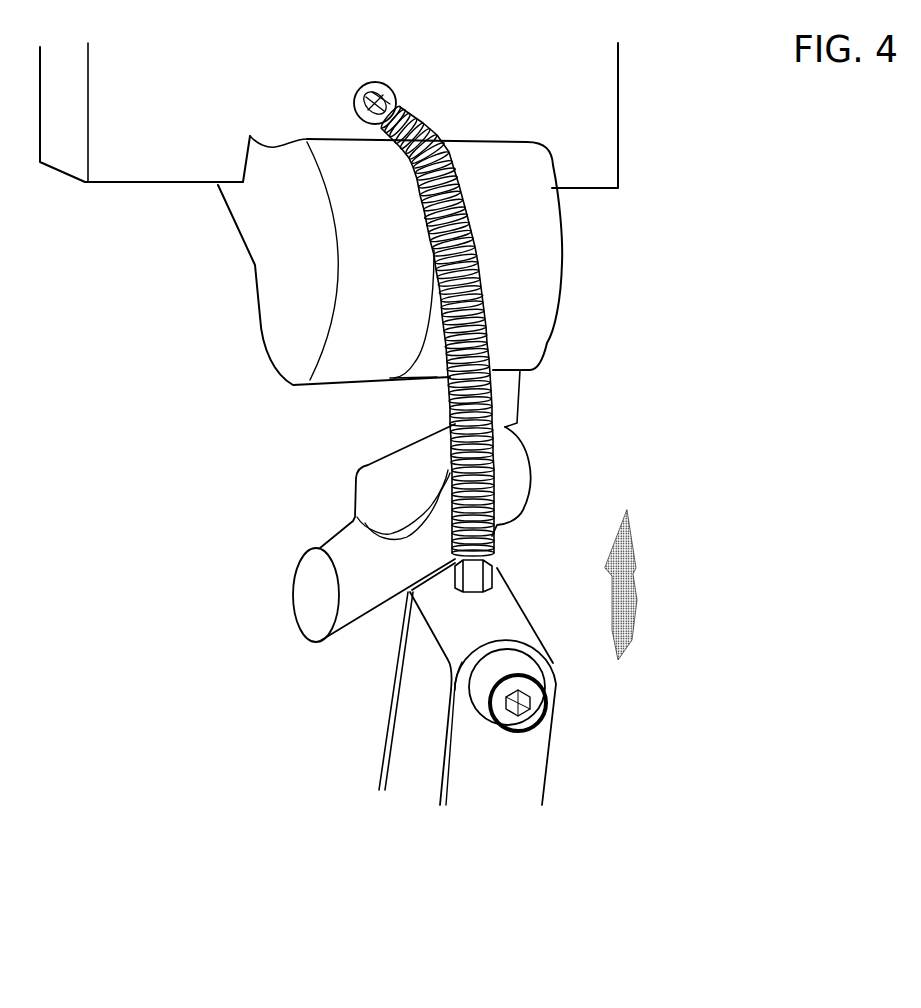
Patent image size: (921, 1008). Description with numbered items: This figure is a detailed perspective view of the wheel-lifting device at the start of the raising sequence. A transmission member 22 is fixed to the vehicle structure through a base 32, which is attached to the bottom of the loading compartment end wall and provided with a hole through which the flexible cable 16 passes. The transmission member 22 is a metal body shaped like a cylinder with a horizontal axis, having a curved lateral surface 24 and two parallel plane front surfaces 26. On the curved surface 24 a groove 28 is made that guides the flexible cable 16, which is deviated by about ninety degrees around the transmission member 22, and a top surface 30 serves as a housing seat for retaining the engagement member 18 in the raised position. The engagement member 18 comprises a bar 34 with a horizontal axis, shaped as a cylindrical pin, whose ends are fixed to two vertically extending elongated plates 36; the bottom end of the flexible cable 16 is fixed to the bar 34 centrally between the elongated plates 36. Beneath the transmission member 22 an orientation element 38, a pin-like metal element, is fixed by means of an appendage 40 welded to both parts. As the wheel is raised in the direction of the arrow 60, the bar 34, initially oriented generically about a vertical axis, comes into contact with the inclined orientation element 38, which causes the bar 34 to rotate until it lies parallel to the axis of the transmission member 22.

The flexible cable 16 is at (422, 123).
The engagement member 18 is at (618, 735).
The transmission member 22 is at (588, 258).
The curved lateral surface 24 is at (523, 325).
The plane front surfaces 26 is at (275, 307).
The groove 28 is at (418, 383).
The top surface 30 is at (277, 137).
The base 32 is at (623, 117).
The bar 34 is at (517, 613).
The elongated plates 36 is at (442, 763).
The orientation element 38 is at (357, 627).
The appendage 40 is at (387, 480).
The arrow 60 is at (637, 570).